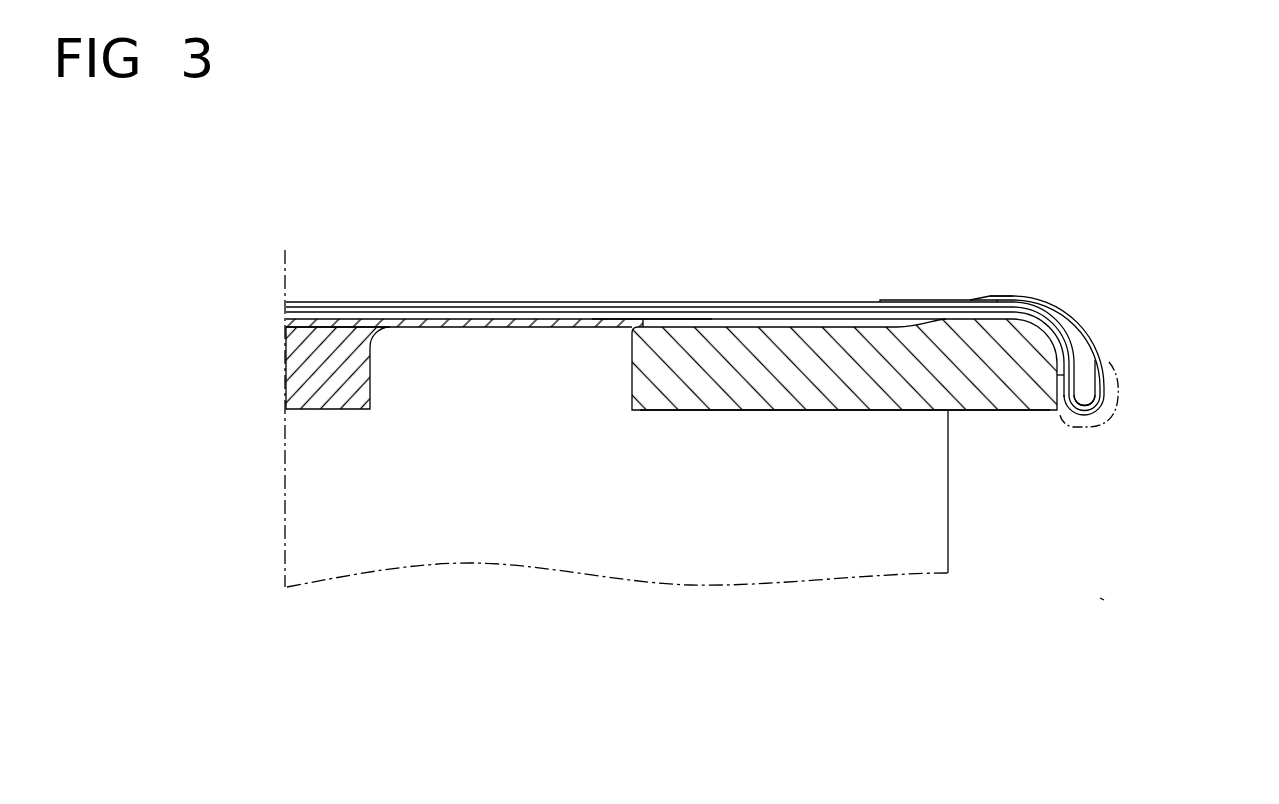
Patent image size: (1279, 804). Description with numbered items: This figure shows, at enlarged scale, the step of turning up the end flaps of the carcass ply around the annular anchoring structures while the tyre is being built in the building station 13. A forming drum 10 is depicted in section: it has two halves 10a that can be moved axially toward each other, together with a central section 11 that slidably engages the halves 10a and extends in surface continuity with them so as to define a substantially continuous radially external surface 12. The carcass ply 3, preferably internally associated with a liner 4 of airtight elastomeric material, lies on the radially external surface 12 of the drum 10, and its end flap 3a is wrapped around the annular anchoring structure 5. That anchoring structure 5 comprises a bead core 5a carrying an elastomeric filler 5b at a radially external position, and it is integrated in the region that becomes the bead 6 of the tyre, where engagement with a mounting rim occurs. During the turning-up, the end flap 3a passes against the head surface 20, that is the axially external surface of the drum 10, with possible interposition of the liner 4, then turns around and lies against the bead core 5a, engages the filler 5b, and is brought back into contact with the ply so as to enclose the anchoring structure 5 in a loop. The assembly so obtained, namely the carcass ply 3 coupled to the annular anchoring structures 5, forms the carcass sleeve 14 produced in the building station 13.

The carcass ply 3 is at (433, 301).
The end flap 3a is at (1070, 304).
The liner 4 is at (525, 319).
The annular anchoring structure 5 is at (1088, 365).
The bead core 5a is at (1083, 398).
The elastomeric filler 5b is at (1080, 347).
The bead 6 is at (1132, 417).
The forming drum 10 is at (713, 470).
The half of the forming drum 10a is at (848, 400).
The central section 11 is at (326, 392).
The radially external surface 12 is at (592, 321).
The building station 13 is at (1105, 600).
The carcass sleeve 14 is at (858, 300).
The head surface 20 is at (1061, 380).